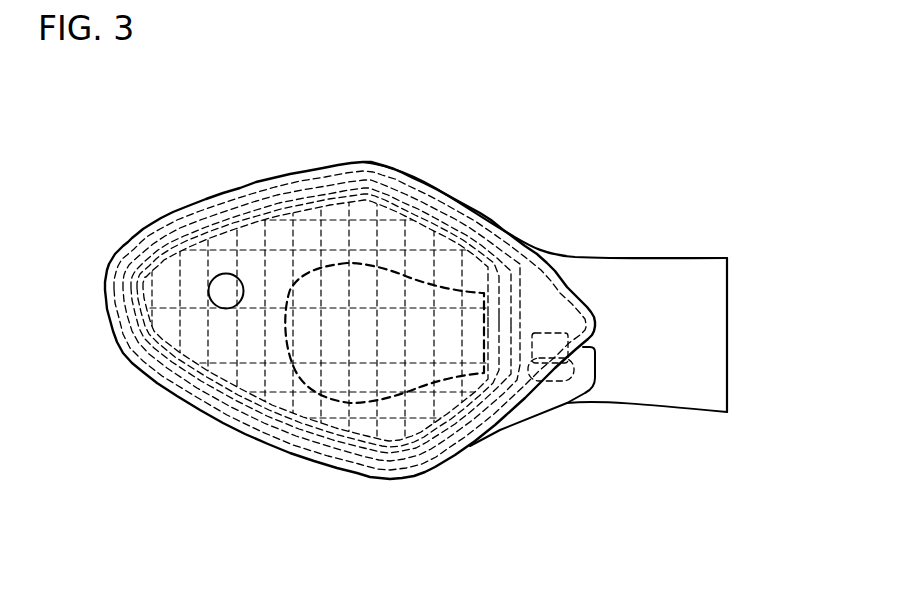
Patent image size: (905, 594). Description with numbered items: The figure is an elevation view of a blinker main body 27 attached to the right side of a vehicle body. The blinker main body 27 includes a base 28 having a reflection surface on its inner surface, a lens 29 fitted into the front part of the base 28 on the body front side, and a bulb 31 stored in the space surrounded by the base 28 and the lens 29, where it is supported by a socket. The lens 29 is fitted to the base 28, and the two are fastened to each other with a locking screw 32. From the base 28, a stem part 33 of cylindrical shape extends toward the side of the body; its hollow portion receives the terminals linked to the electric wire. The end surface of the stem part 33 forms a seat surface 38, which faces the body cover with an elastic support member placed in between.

The blinker main body 27 is at (456, 152).
The base 28 is at (568, 263).
The lens 29 is at (253, 383).
The bulb 31 is at (332, 397).
The locking screw 32 is at (562, 380).
The stem part 33 is at (643, 390).
The seat surface 38 is at (728, 312).